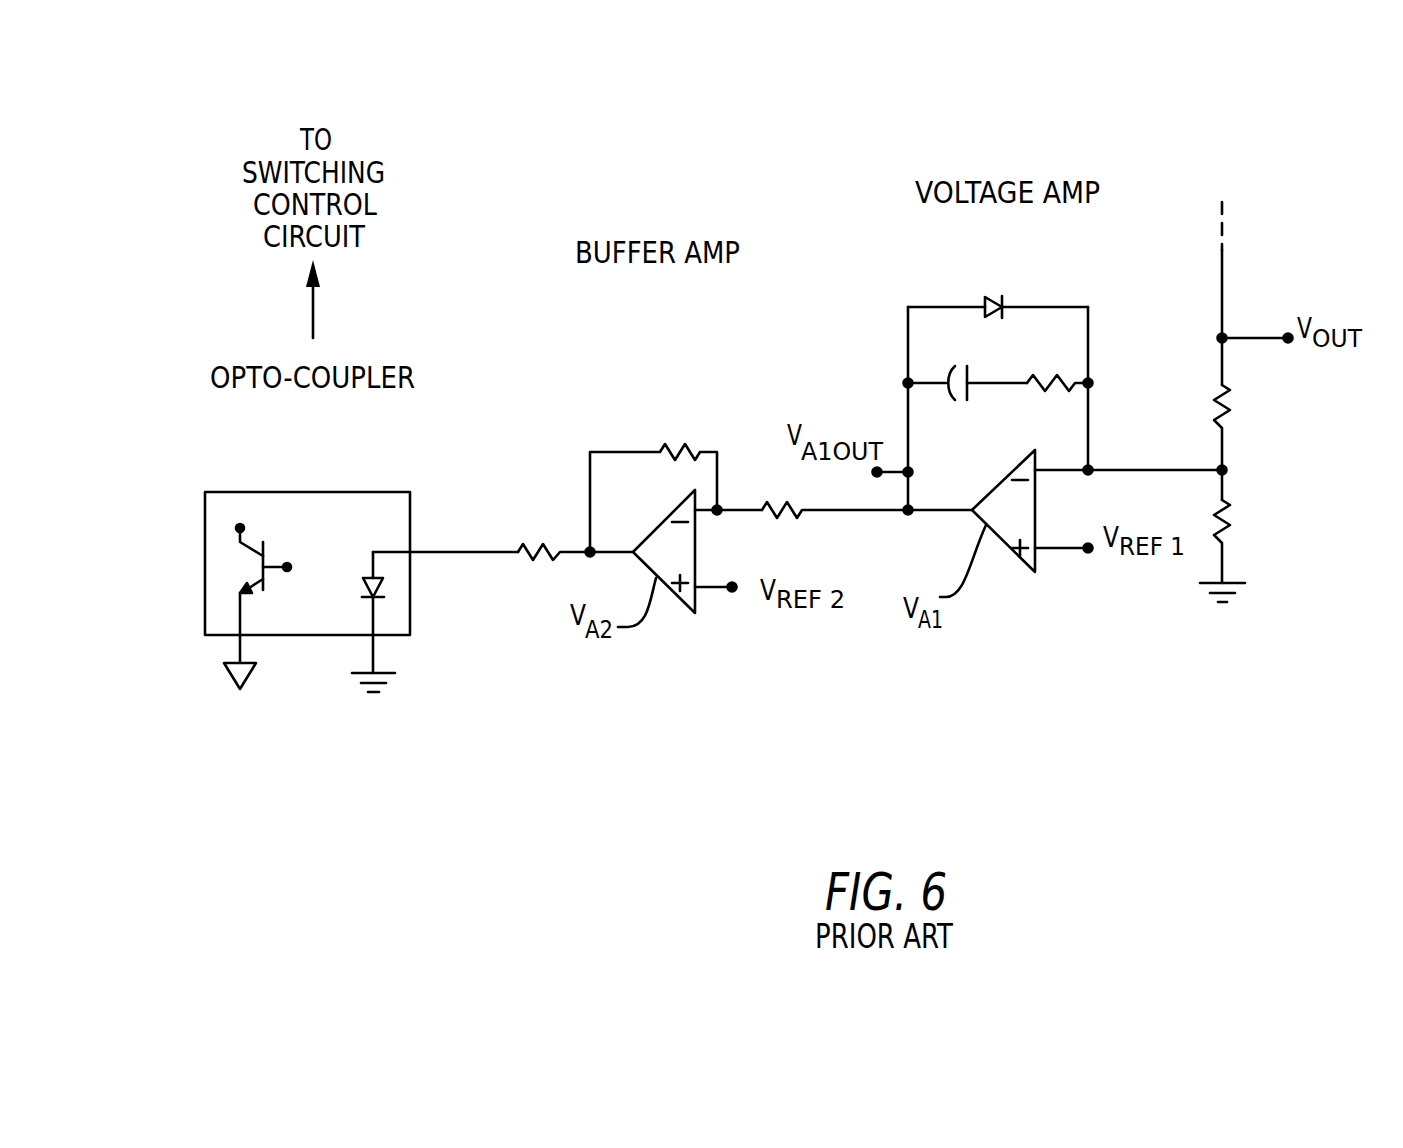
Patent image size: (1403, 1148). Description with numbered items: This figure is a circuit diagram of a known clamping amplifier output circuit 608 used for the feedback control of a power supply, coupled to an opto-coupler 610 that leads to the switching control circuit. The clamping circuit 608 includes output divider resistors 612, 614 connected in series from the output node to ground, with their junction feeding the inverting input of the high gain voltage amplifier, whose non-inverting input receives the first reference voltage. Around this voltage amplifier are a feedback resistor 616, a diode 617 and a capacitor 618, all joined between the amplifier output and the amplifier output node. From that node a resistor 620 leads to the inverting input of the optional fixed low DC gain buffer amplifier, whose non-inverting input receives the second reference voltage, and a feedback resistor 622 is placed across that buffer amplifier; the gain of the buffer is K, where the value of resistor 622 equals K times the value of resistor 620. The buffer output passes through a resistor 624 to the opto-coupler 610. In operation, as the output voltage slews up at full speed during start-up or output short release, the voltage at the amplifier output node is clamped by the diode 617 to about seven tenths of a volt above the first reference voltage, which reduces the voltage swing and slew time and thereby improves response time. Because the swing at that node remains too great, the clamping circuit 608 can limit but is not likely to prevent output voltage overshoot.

The clamping amplifier output circuit 608 is at (1139, 142).
The opto-coupler 610 is at (323, 635).
The output divider resistor 612 is at (1230, 407).
The output divider resistor 614 is at (1230, 512).
The resistor 616 is at (1044, 393).
The diode 617 is at (994, 298).
The capacitor 618 is at (950, 397).
The resistor 620 is at (781, 519).
The resistor 622 is at (689, 446).
The resistor 624 is at (563, 548).